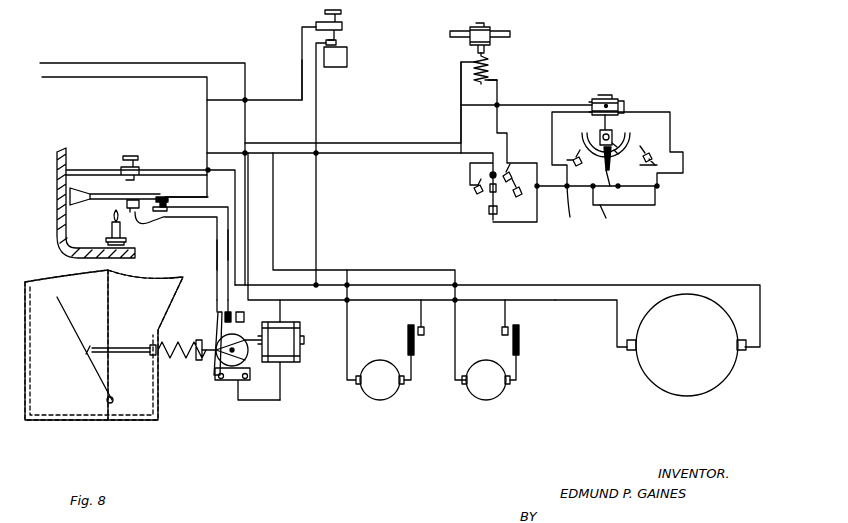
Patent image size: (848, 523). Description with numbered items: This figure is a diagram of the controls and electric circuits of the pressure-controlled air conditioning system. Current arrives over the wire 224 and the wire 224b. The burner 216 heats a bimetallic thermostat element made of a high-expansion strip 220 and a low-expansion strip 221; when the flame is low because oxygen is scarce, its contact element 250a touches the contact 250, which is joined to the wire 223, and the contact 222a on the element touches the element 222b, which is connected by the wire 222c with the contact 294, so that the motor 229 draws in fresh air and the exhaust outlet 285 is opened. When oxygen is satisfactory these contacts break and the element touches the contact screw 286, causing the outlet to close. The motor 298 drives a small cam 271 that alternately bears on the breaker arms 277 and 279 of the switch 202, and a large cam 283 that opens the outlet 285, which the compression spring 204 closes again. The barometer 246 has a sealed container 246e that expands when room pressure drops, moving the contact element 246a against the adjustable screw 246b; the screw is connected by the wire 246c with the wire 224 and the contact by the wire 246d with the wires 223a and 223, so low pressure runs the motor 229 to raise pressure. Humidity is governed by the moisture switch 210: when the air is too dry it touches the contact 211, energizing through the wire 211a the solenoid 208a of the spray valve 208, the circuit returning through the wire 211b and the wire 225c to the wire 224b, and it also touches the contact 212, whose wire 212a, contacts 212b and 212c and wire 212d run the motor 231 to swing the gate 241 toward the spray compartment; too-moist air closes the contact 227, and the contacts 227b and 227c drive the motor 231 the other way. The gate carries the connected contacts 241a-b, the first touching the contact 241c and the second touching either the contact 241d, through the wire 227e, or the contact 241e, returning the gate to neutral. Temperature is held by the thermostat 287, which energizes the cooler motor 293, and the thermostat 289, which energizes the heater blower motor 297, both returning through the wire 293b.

The wire 224b is at (136, 62).
The wire 224 is at (121, 86).
The barometer 246 is at (306, 23).
The adjustable contact screw 246b is at (342, 15).
The contact element 246a is at (338, 42).
The sealed container 246e is at (347, 60).
The wire 246c is at (302, 65).
The wire 246d is at (316, 105).
The spray valve 208 is at (488, 26).
The solenoid 208a is at (486, 64).
The wire 211b is at (461, 71).
The wire 211a is at (490, 78).
The wire 225c is at (425, 138).
The motor 231 is at (616, 100).
The contact 241e is at (600, 135).
The gate 241 is at (612, 138).
The contact 241c is at (617, 147).
The contact 241d is at (618, 154).
The wire 212d is at (670, 122).
The contact 212b is at (655, 152).
The wire 212a is at (670, 165).
The contact 212c is at (655, 180).
The connected contacts 241a-b is at (616, 170).
The contact 227b is at (585, 150).
The contact 227 is at (470, 196).
The moisture control switch 210 is at (490, 196).
The contact 211 is at (513, 172).
The contact 212 is at (522, 195).
The contact 227c is at (571, 217).
The wire 227e is at (604, 222).
The contact screw 286 is at (135, 160).
The strip 221 is at (70, 196).
The strip 220 is at (57, 211).
The burner 216 is at (110, 233).
The contact 222a is at (160, 202).
The contact element 250a is at (188, 194).
The contact element 222b is at (136, 213).
The contact 250 is at (168, 212).
The wire 223 is at (228, 242).
The wire 222c is at (217, 258).
The wire 293b is at (432, 268).
The wire 223a is at (586, 281).
The contact 294 is at (226, 312).
The breaker arm 277 is at (217, 330).
The breaker arm 279 is at (246, 324).
The outlet 285 is at (92, 362).
The compression spring 204 is at (172, 356).
The large cam 283 is at (210, 360).
The switch 202 is at (232, 381).
The small cam 271 is at (245, 368).
The motor 298 is at (292, 364).
The thermostat 289 is at (414, 348).
The motor 297 is at (392, 396).
The thermostat 287 is at (519, 347).
The motor 293 is at (497, 396).
The motor 229 is at (644, 364).